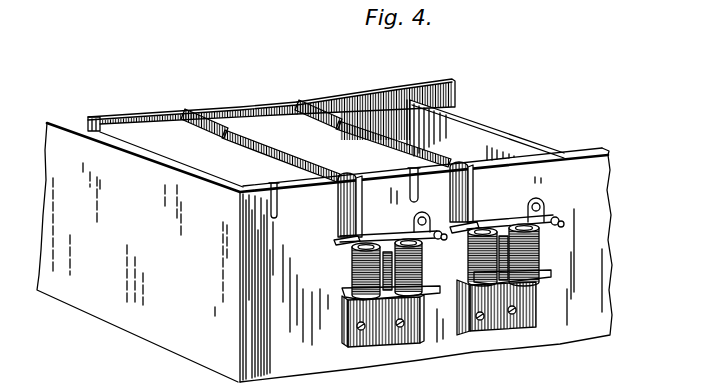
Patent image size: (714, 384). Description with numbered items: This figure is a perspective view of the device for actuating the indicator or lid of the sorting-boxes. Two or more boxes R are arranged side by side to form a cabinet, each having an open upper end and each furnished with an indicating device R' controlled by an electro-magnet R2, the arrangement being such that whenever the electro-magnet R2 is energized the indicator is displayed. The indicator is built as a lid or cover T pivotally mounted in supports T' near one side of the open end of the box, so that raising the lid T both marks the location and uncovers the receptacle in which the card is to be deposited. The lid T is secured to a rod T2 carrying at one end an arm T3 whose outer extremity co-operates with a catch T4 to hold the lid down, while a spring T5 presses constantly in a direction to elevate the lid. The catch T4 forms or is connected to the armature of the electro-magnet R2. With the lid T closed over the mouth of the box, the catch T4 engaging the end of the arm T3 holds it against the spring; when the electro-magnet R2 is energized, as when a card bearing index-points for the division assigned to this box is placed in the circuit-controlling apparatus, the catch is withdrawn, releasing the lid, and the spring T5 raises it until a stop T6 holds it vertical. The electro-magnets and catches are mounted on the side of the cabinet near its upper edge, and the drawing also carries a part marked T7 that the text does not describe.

The lid T is at (336, 151).
The supports T' is at (395, 199).
The rod T2 is at (283, 146).
The arm T3 is at (397, 137).
The catch T4 is at (339, 240).
The spring T5 is at (208, 111).
The stop T6 is at (276, 186).
The wire T7 is at (378, 178).
The box R is at (485, 130).
The indicating device R' is at (171, 159).
The electro-magnet R2 is at (424, 272).